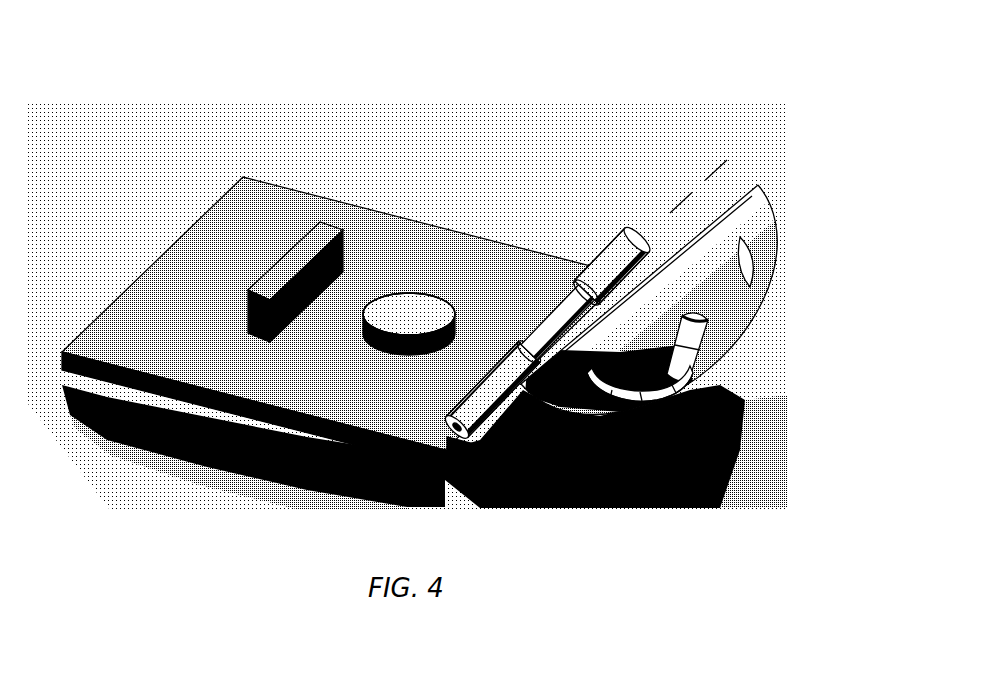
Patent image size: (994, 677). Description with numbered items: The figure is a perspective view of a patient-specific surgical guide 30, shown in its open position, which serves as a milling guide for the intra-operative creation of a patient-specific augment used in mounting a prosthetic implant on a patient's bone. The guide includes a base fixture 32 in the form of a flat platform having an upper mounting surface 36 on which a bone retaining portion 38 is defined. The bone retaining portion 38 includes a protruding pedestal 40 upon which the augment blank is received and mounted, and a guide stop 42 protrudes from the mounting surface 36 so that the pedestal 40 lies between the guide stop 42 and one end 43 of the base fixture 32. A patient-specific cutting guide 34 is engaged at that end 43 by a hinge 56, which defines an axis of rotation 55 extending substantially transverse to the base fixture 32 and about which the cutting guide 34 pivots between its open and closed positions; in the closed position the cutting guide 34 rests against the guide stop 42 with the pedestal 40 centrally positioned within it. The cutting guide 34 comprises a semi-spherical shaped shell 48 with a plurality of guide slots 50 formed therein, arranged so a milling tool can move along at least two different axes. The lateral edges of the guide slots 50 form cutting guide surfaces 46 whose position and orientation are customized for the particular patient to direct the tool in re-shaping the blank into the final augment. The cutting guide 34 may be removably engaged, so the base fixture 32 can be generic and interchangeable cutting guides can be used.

The patient-specific surgical guide 30 is at (518, 147).
The base fixture 32 is at (198, 243).
The patient-specific cutting guide 34 is at (762, 208).
The mounting surface 36 is at (370, 226).
The bone retaining portion 38 is at (370, 317).
The pedestal 40 is at (437, 326).
The guide stop 42 is at (309, 243).
The end of the base fixture 43 is at (495, 485).
The cutting guide surfaces 46 is at (703, 353).
The semi-spherical shaped shell 48 is at (645, 352).
The guide slots 50 is at (720, 324).
The axis of rotation 55 is at (367, 513).
The hinge 56 is at (574, 287).